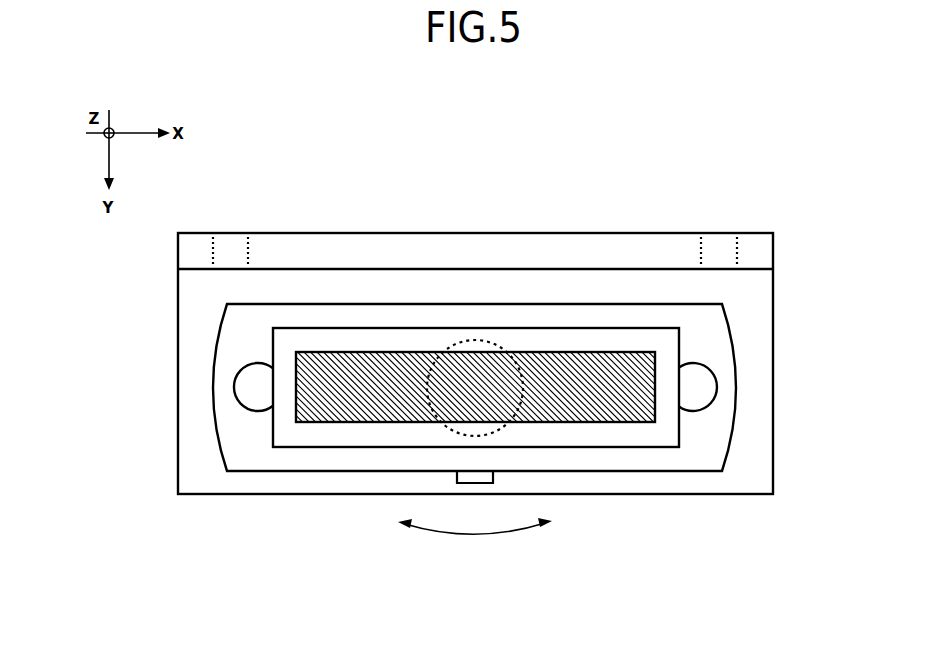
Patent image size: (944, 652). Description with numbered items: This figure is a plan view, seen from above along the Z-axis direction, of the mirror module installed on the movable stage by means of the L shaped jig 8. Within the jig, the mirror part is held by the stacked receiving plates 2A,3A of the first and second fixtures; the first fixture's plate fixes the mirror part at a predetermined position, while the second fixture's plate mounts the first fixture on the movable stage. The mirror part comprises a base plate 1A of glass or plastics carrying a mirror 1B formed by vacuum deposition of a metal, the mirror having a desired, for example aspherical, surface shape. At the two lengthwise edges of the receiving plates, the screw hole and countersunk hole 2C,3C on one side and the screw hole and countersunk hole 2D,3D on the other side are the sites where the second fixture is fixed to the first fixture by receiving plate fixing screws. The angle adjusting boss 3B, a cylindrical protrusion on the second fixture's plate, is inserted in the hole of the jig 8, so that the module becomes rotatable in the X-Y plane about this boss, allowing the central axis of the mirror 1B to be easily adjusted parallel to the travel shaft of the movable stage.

The L shaped jig 8 is at (535, 233).
The receiving plates 2A,3A is at (736, 352).
The base plate 1A is at (680, 423).
The mirror 1B is at (337, 422).
The angle adjusting boss 3B is at (460, 340).
The screw hole and countersunk hole 2C,3C is at (237, 399).
The screw hole and countersunk hole 2D,3D is at (715, 389).